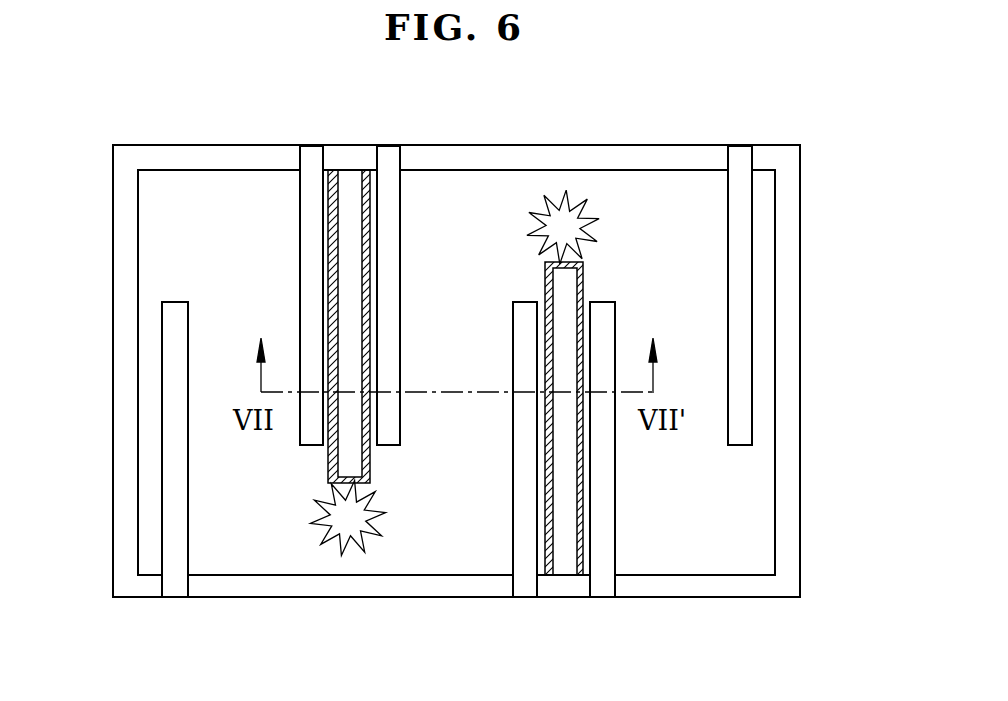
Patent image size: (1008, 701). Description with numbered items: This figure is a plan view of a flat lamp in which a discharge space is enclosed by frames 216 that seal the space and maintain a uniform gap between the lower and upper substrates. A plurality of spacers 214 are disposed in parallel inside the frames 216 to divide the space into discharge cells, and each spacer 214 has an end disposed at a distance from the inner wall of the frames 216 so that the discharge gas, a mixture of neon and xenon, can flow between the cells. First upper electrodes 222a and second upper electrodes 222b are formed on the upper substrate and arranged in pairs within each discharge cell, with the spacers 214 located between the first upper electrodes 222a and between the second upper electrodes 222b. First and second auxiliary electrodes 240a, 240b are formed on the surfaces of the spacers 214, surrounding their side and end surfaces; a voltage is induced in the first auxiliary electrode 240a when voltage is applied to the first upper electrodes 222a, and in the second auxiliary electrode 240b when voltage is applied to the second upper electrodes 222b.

The frame 216 is at (120, 367).
The first upper electrode 222a is at (312, 155).
The second upper electrode 222b is at (173, 593).
The spacer 214 is at (351, 185).
The first auxiliary electrode 240a is at (370, 485).
The second auxiliary electrode 240b is at (580, 264).